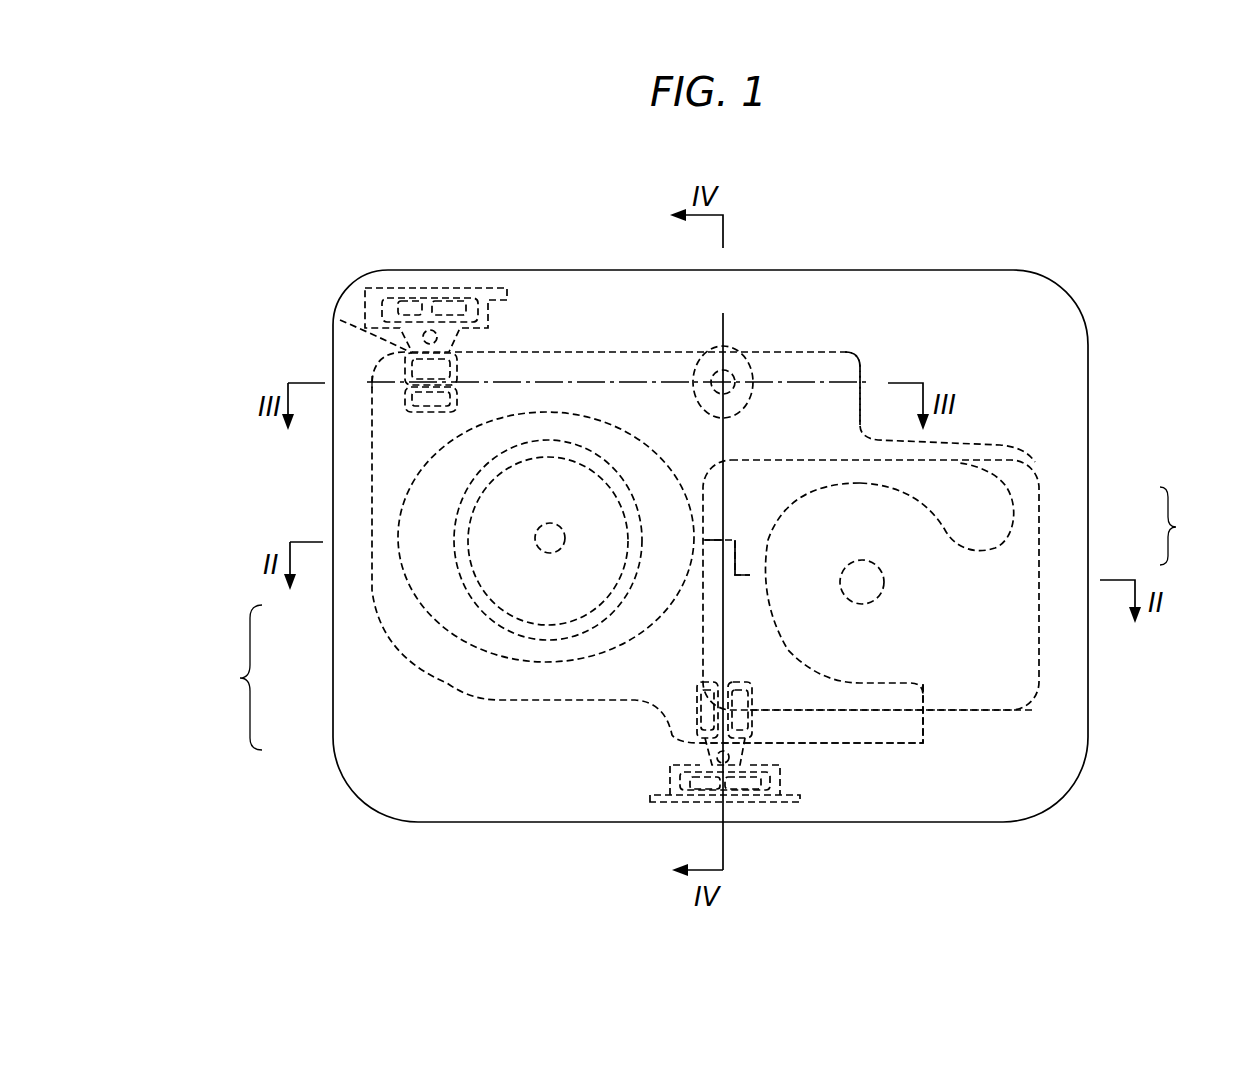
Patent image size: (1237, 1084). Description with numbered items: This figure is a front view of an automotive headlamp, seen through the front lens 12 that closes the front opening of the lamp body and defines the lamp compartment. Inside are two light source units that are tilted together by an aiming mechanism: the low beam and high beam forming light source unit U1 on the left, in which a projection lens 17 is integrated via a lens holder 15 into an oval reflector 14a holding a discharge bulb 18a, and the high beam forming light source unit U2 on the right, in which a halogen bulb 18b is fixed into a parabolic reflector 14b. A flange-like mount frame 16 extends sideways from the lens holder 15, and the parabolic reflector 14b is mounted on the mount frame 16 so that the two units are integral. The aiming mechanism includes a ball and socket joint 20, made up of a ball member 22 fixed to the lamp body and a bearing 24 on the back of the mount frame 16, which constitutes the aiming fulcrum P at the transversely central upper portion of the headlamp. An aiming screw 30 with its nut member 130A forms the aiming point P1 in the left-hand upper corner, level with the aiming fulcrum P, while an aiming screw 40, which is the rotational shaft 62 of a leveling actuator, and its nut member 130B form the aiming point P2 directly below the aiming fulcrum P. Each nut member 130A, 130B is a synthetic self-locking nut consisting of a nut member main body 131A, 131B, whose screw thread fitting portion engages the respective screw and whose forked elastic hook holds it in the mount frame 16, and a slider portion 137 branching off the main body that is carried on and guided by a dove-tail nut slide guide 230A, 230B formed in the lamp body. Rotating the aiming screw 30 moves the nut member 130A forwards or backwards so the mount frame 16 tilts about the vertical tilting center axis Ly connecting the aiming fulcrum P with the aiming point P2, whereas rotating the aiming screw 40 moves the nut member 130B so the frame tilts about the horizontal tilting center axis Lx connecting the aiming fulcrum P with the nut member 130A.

The front lens 12 is at (962, 304).
The lens holder 15 is at (617, 352).
The mount frame 16 is at (845, 350).
The ball and socket joint 20 is at (781, 290).
The ball member 22 is at (747, 346).
The bearing 24 is at (760, 358).
The oval reflector 14a is at (450, 575).
The discharge bulb 18a is at (485, 592).
The projection lens 17 is at (536, 550).
The parabolic reflector 14b is at (1039, 512).
The halogen bulb 18b is at (885, 580).
The nut member 130A is at (475, 287).
The slider portion 137 is at (447, 280).
The nut member main body 131A is at (470, 368).
The nut slide guide 230A is at (362, 310).
The aiming screw 30 is at (340, 320).
The nut member 130B is at (785, 803).
The nut member main body 131B is at (770, 725).
The nut slide guide 230B is at (653, 785).
The aiming screw 40 is at (867, 782).
The rotational shaft 62 is at (748, 705).
The aiming fulcrum P is at (704, 343).
The aiming point P1 is at (398, 372).
The aiming point P2 is at (702, 690).
The horizontal tilting center axis Lx is at (655, 382).
The vertical tilting center axis Ly is at (723, 632).
The low beam and high beam forming light source unit U1 is at (237, 677).
The high beam forming light source unit U2 is at (1181, 526).